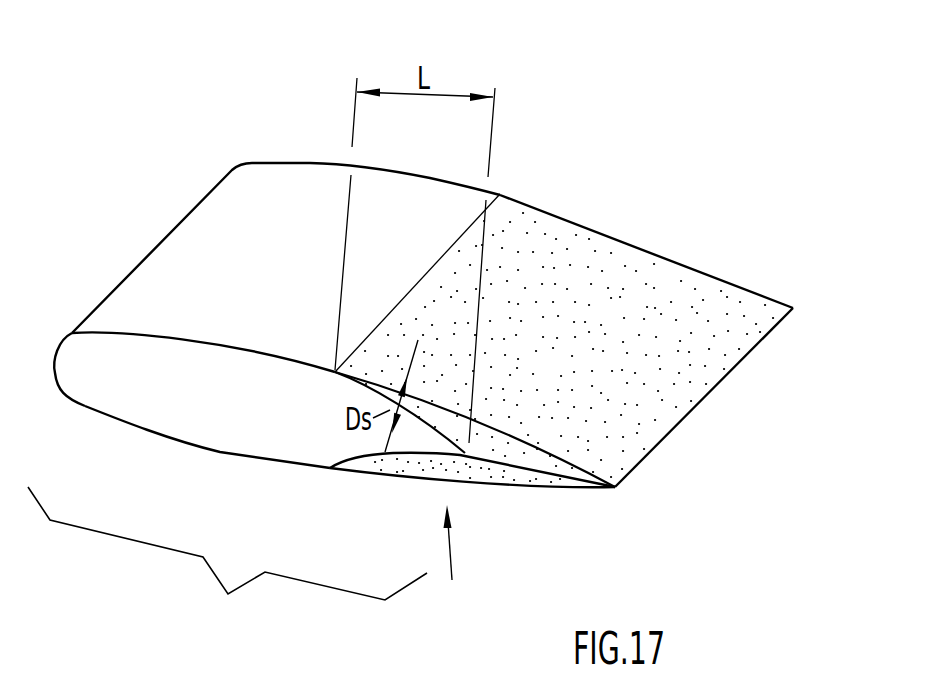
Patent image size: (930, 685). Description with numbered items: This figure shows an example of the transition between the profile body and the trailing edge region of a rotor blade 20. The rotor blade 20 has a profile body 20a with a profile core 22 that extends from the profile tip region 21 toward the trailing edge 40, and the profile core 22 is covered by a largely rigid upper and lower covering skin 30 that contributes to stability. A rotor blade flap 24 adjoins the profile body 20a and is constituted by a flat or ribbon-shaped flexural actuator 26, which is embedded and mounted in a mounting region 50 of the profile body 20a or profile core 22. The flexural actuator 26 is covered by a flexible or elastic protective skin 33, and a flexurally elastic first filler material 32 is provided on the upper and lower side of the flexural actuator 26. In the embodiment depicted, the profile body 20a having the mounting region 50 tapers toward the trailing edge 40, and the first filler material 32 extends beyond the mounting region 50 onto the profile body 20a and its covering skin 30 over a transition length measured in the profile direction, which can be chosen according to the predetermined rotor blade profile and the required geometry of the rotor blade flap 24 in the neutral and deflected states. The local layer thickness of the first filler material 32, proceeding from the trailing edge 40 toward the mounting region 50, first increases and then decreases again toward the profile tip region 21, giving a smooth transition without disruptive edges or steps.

The rotor blade 20 is at (248, 100).
The profile body 20a is at (227, 566).
The profile tip region 21 is at (76, 298).
The profile core 22 is at (180, 405).
The rotor blade flap 24 is at (555, 482).
The flexural actuator 26 is at (515, 465).
The covering skin 30 is at (305, 158).
The first filler material 32 is at (390, 402).
The protective skin 33 is at (613, 440).
The trailing edge 40 is at (768, 333).
The mounting region 50 is at (446, 560).